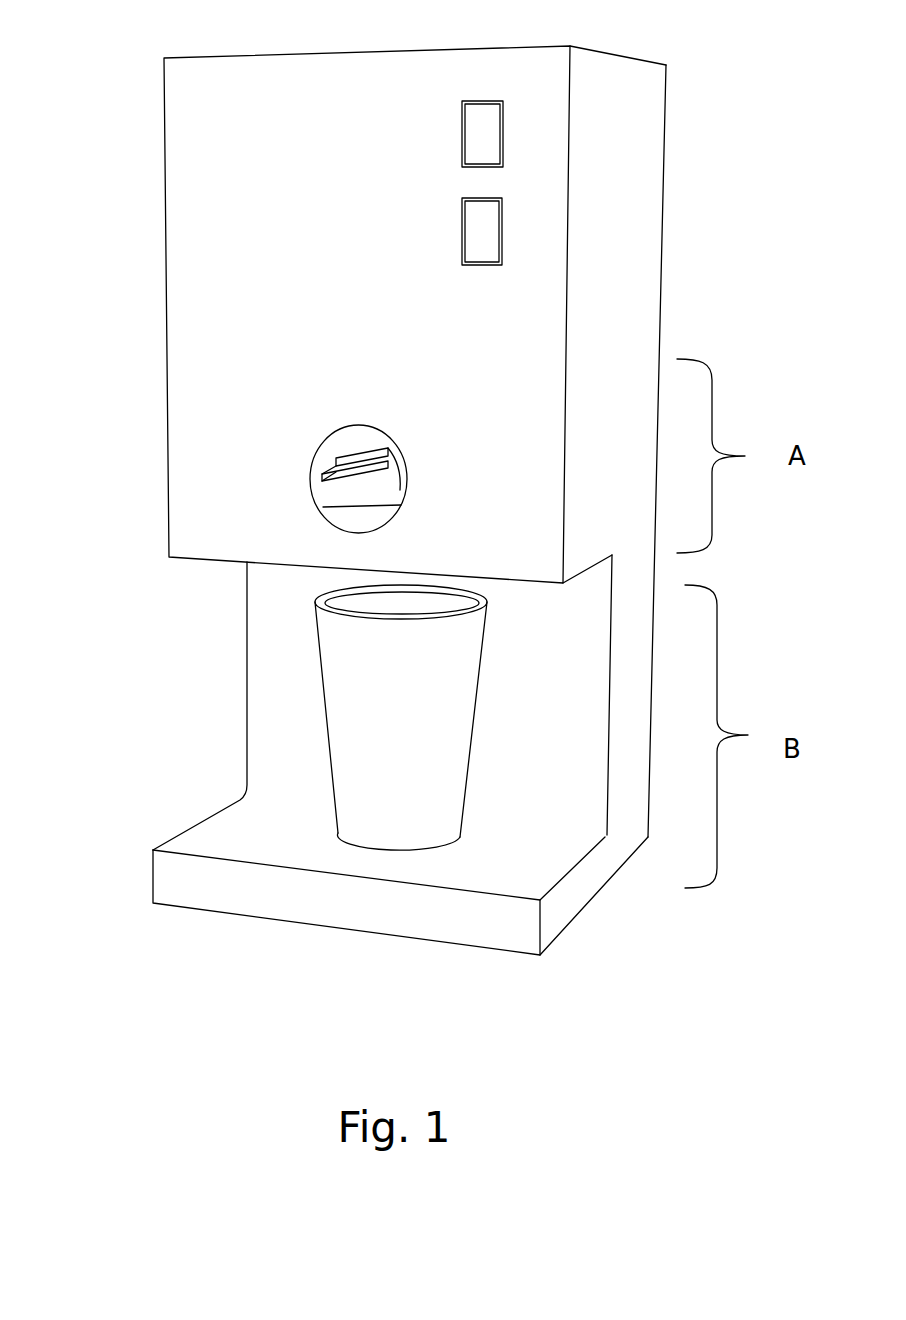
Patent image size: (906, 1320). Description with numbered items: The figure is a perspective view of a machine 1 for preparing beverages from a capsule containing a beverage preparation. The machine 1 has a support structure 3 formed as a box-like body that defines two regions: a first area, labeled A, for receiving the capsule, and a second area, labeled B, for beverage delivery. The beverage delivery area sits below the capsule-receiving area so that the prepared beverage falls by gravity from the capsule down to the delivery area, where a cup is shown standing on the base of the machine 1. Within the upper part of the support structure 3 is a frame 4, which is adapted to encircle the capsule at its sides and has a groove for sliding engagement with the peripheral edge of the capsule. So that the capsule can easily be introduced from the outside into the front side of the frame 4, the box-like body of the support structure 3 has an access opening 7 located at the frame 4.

The machine 1 is at (404, 603).
The support structure 3 is at (607, 308).
The frame 4 is at (333, 462).
The access opening 7 is at (320, 518).